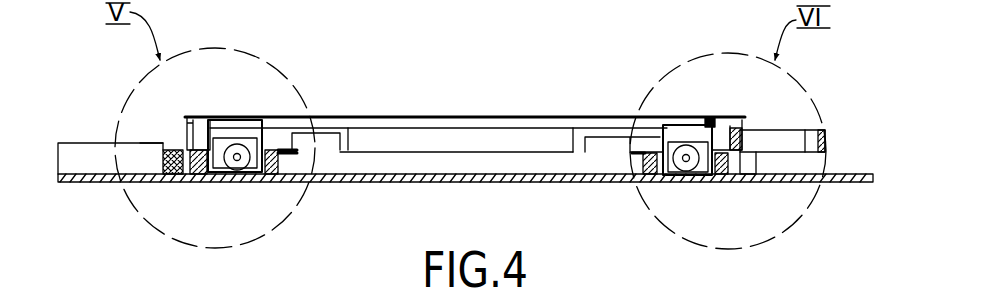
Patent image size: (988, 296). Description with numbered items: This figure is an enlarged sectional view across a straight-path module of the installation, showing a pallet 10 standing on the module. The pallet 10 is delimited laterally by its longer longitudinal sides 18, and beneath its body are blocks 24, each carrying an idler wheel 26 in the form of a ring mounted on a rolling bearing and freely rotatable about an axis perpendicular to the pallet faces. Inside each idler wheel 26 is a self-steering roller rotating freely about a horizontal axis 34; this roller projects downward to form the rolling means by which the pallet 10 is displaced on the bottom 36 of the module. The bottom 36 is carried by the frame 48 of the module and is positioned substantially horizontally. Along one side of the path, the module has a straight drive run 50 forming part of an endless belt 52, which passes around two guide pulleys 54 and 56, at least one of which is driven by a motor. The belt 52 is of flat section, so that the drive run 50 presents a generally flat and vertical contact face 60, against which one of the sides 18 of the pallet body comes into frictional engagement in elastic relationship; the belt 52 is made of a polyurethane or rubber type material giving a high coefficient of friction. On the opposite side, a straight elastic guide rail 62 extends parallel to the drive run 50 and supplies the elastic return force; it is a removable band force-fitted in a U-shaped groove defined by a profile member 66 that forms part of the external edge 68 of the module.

The pallet 10 is at (392, 114).
The longitudinal side 18 is at (187, 133).
The block 24 is at (322, 147).
The idler wheel 26 is at (279, 176).
The horizontal axis 34 is at (237, 176).
The bottom 36 is at (500, 177).
The frame 48 is at (405, 0).
The drive run 50 is at (746, 176).
The endless belt 52 is at (830, 142).
The guide pulley 54 is at (805, 140).
The guide pulley 56 is at (556, 0).
The contact face 60 is at (713, 130).
The guide rail 62 is at (188, 176).
The profile member 66 is at (152, 143).
The external edge 68 is at (88, 143).